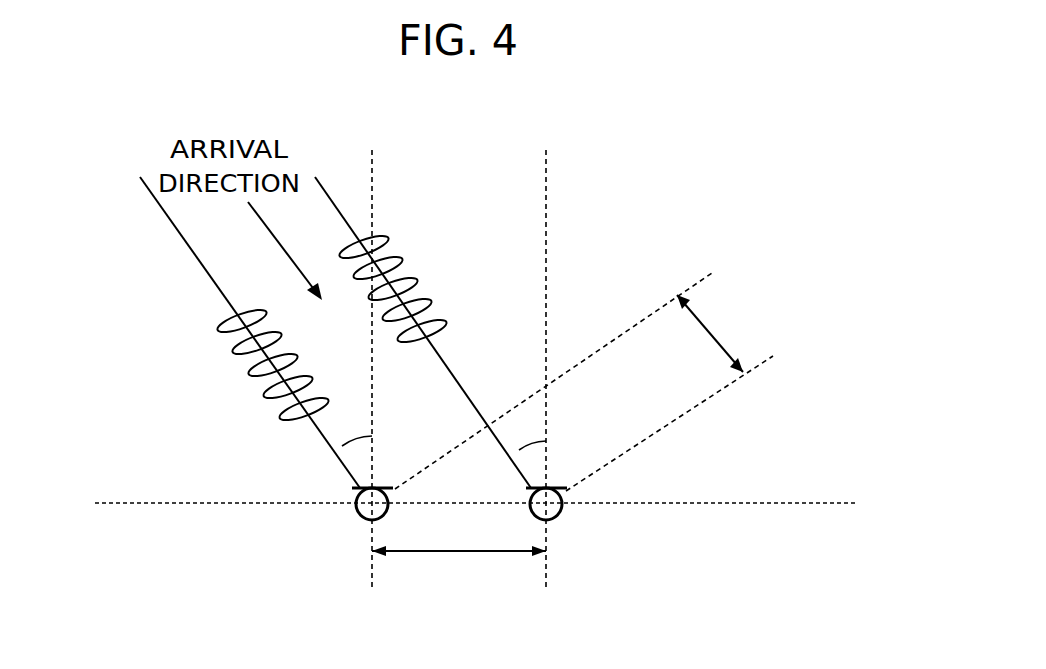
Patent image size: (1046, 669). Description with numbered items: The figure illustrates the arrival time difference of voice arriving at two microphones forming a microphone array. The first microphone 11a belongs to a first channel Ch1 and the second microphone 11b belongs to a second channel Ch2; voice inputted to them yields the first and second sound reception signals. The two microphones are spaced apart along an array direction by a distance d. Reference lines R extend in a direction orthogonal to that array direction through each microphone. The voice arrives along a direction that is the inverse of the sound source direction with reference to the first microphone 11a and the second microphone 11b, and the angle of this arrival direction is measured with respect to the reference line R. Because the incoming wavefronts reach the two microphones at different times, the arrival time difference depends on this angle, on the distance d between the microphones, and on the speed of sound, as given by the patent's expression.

The first microphone 11a is at (347, 540).
The second microphone 11b is at (574, 540).
The first channel Ch1 is at (347, 511).
The second channel Ch2 is at (573, 511).
The reference line R is at (459, 349).
The distance between the first microphone and the second microphone d is at (459, 571).